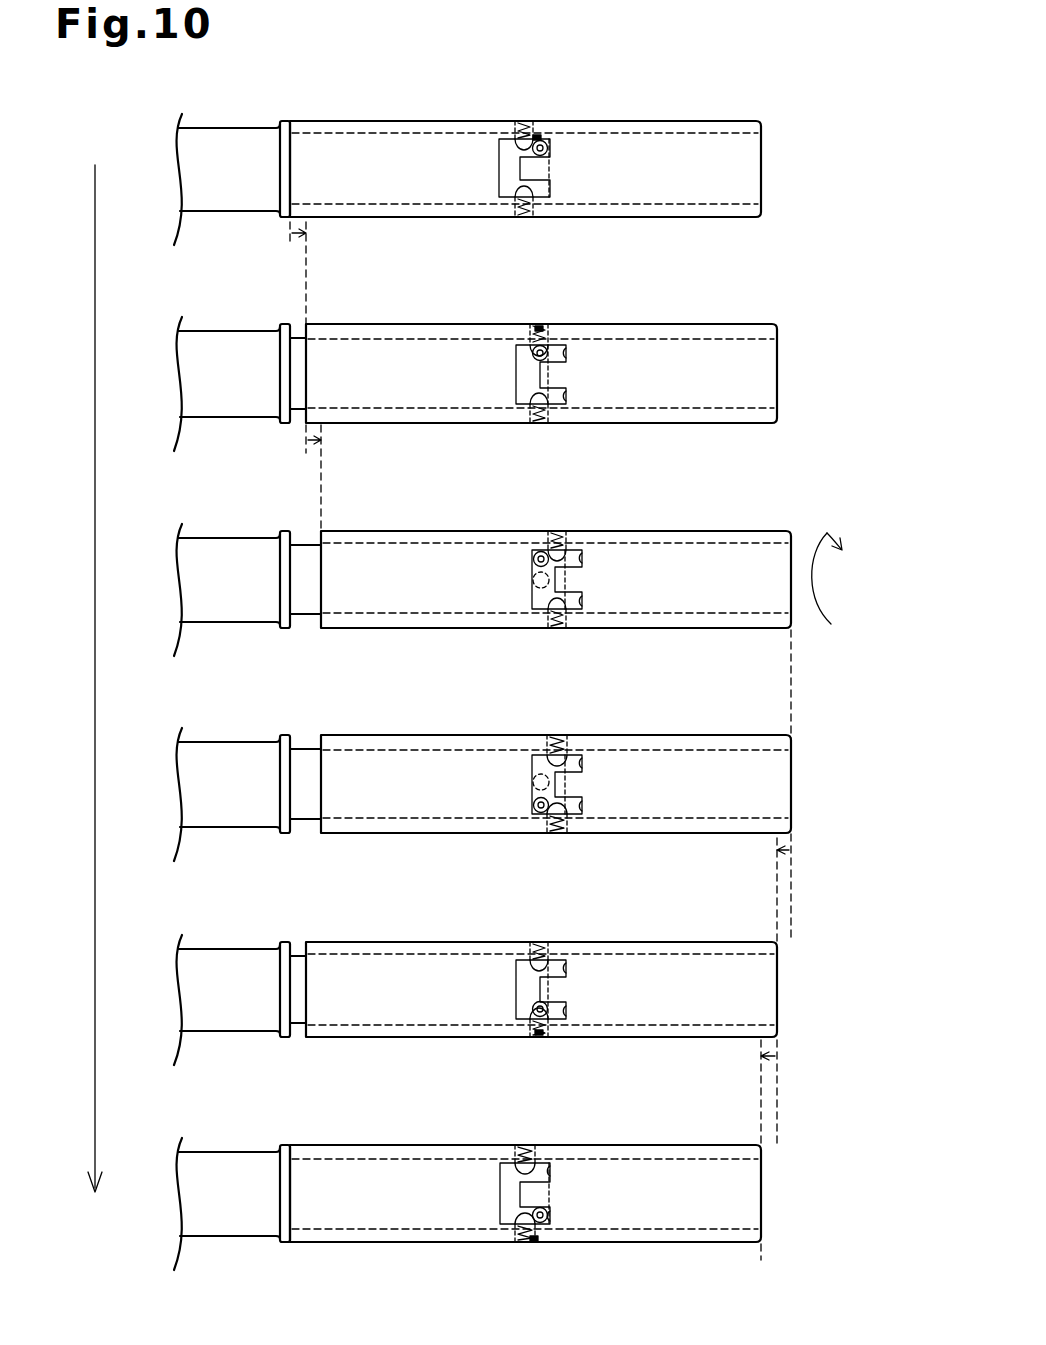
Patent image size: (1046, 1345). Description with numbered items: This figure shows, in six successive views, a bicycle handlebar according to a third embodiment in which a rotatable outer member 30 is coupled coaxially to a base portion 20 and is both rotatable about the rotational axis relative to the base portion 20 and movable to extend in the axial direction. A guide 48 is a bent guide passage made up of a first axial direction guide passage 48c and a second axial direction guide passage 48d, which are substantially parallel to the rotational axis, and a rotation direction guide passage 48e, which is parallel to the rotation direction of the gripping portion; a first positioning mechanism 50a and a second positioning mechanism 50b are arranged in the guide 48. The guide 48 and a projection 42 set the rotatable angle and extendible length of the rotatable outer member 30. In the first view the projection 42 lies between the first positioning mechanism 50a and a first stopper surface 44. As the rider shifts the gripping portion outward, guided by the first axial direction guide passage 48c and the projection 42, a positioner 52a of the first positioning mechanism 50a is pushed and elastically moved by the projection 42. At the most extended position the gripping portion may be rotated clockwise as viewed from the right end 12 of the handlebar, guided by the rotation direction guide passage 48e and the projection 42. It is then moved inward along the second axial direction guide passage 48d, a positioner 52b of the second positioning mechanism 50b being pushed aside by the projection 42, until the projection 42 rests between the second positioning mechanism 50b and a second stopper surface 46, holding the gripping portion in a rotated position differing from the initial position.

The right end 12 is at (763, 157).
The base portion 20 is at (236, 146).
The rotatable outer member 30 is at (733, 144).
The projection 42 is at (548, 156).
The first stopper surface 44 is at (567, 352).
The second stopper surface 46 is at (567, 392).
The guide 48 is at (507, 170).
The first axial direction guide passage 48c is at (555, 342).
The second axial direction guide passage 48d is at (555, 403).
The rotation direction guide passage 48e is at (525, 369).
The first positioning mechanism 50a is at (530, 120).
The second positioning mechanism 50b is at (530, 220).
The positioner 52a is at (522, 147).
The positioner 52b is at (578, 808).